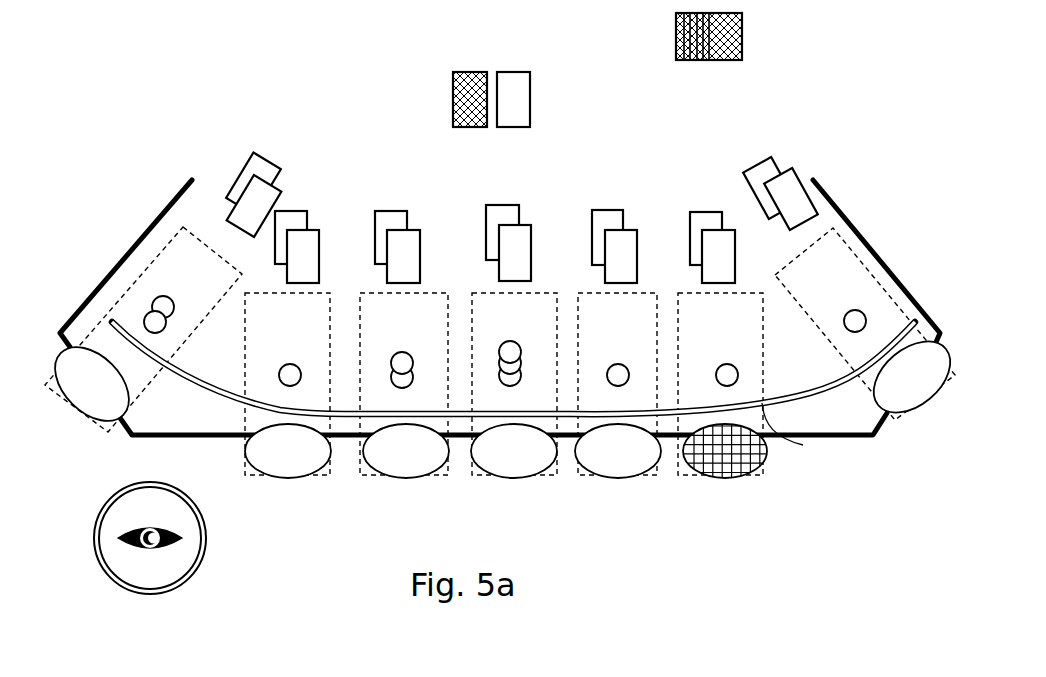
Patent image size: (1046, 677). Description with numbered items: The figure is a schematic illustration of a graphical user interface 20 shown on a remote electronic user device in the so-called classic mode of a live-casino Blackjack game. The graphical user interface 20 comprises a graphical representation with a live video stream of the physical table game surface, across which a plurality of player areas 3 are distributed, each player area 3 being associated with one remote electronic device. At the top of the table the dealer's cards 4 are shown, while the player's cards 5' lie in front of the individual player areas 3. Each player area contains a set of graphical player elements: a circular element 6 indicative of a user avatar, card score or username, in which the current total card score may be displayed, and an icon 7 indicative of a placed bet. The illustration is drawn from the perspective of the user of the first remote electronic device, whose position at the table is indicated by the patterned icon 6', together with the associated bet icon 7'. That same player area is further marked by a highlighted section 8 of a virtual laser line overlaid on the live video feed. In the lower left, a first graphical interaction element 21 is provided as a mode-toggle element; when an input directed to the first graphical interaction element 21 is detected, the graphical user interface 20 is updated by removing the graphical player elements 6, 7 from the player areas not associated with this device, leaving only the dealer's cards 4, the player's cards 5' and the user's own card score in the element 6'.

The player area 3 is at (170, 263).
The dealer's cards 4 is at (549, 77).
The player's cards 5' is at (522, 213).
The graphical player element indicative of user avatar, card score or username 6 is at (453, 481).
The patterned icon 6' is at (736, 501).
The graphical player element indicative of a placed bet 7 is at (505, 395).
The icon indicative of a placed bet 7' is at (782, 392).
The highlighted section 8 is at (803, 445).
The graphical user interface 20 is at (711, 98).
The first graphical interaction element 21 is at (133, 585).